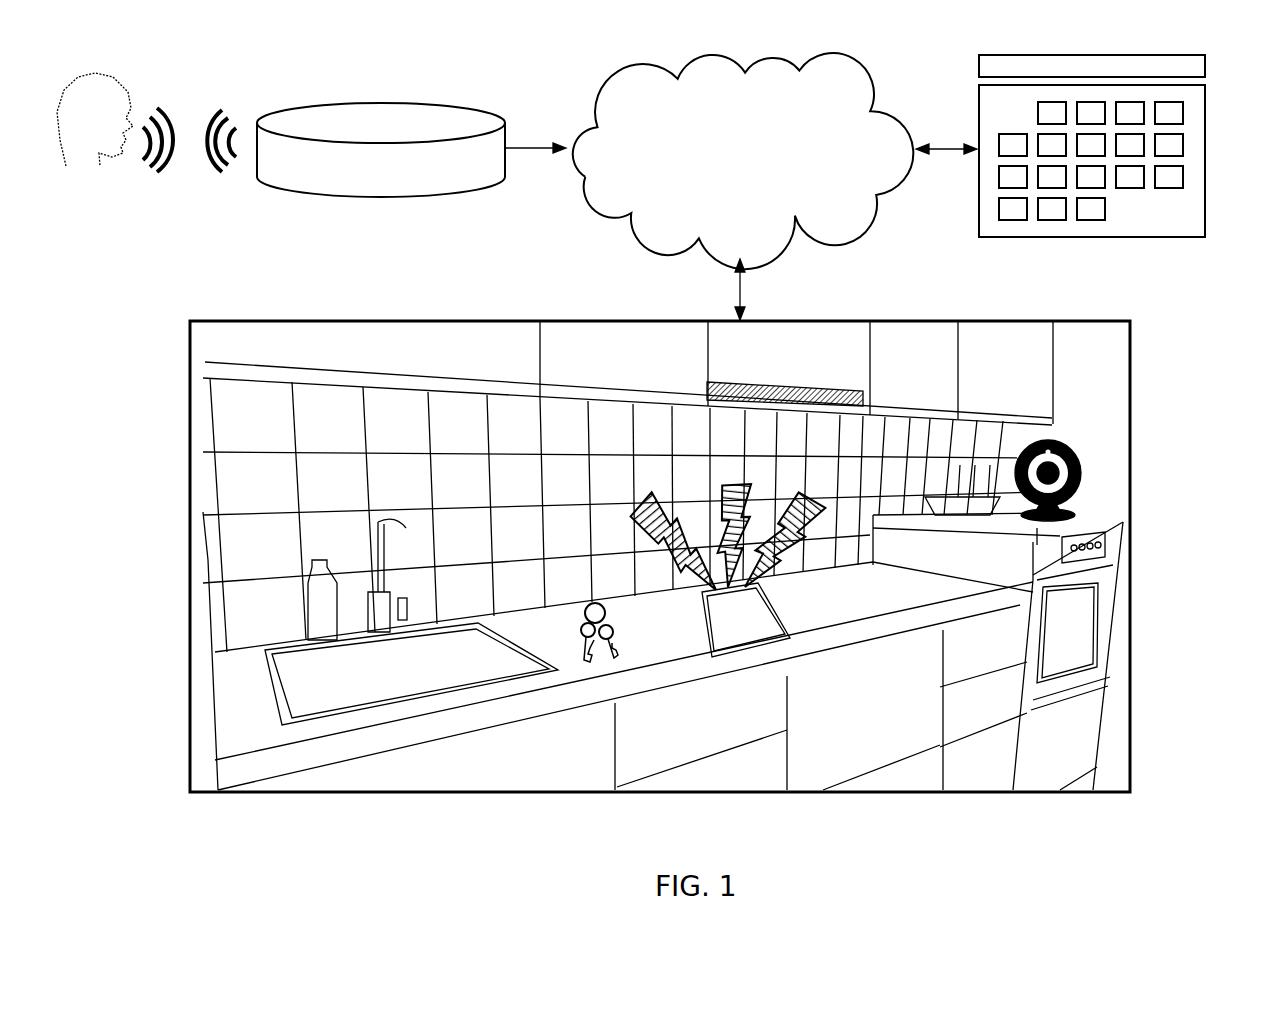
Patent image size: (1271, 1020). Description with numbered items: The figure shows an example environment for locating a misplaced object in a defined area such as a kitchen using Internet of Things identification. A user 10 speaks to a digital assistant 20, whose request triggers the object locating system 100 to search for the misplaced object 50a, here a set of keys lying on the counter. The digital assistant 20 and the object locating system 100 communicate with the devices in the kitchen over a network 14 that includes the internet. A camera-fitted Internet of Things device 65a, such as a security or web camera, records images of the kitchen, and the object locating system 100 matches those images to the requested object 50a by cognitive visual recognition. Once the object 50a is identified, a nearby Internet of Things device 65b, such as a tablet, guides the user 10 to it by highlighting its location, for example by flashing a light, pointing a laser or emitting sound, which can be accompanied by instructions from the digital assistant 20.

The user 10 is at (102, 132).
The digital assistant 20 is at (396, 135).
The network 14 is at (806, 175).
The object locating system 100 is at (1115, 237).
The Internet of Things device with camera 65a is at (1082, 466).
The Internet of Things device for guiding the user 65b is at (777, 604).
The misplaced object 50a is at (587, 652).